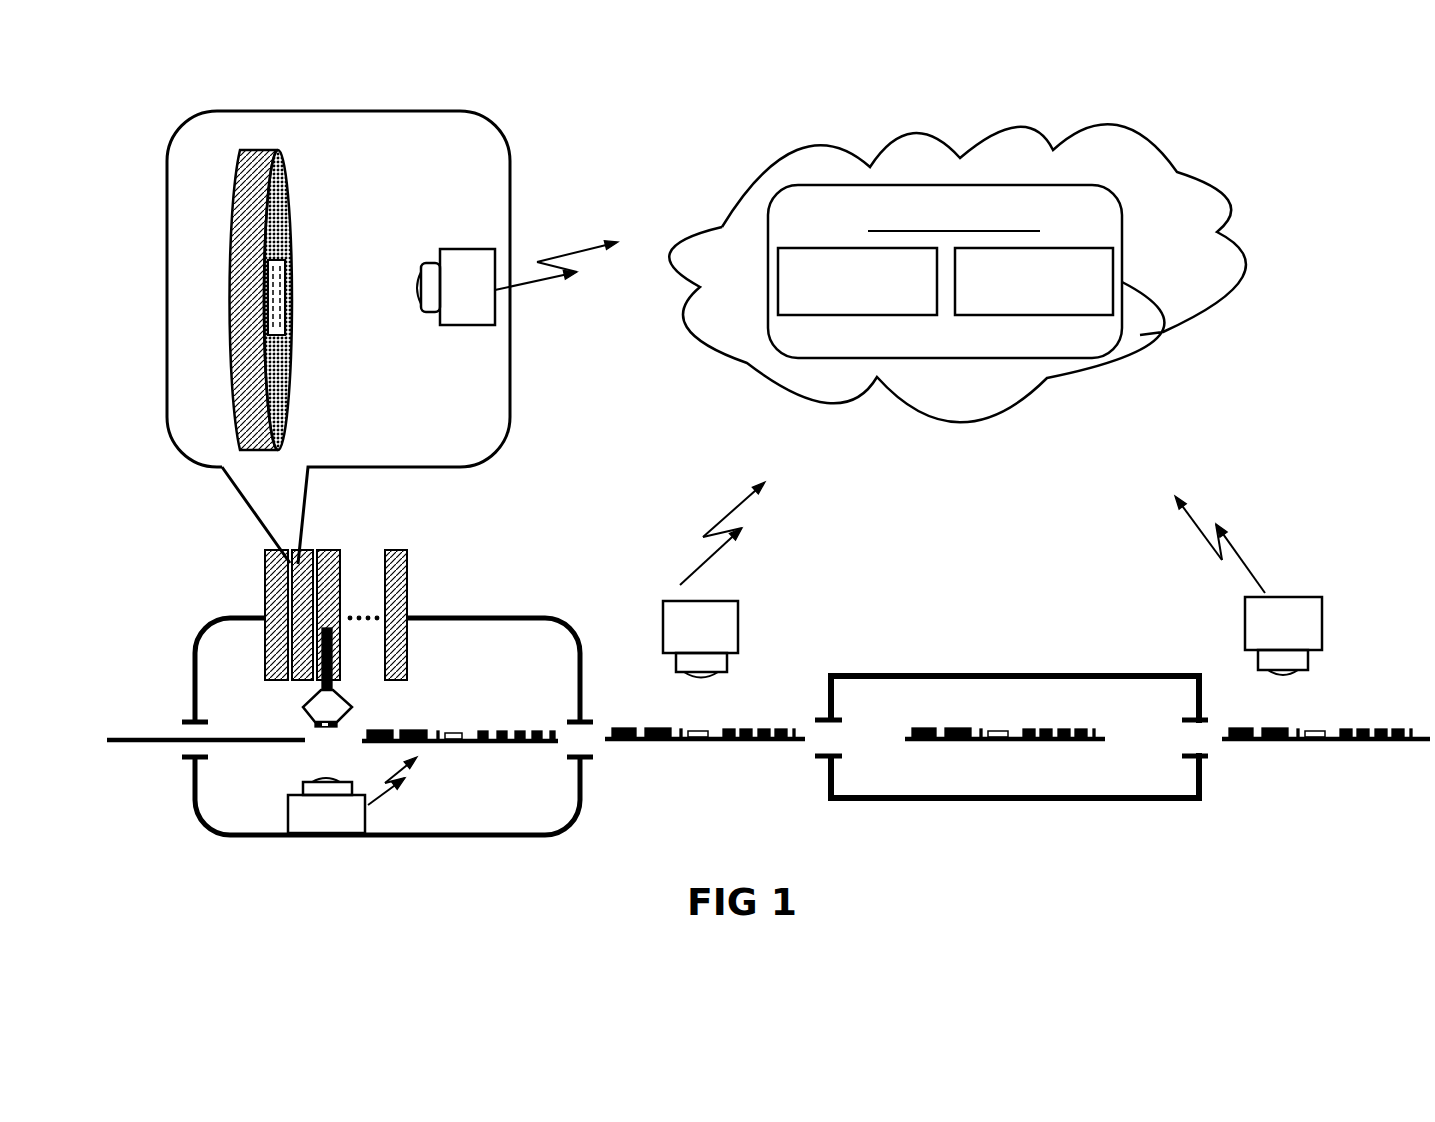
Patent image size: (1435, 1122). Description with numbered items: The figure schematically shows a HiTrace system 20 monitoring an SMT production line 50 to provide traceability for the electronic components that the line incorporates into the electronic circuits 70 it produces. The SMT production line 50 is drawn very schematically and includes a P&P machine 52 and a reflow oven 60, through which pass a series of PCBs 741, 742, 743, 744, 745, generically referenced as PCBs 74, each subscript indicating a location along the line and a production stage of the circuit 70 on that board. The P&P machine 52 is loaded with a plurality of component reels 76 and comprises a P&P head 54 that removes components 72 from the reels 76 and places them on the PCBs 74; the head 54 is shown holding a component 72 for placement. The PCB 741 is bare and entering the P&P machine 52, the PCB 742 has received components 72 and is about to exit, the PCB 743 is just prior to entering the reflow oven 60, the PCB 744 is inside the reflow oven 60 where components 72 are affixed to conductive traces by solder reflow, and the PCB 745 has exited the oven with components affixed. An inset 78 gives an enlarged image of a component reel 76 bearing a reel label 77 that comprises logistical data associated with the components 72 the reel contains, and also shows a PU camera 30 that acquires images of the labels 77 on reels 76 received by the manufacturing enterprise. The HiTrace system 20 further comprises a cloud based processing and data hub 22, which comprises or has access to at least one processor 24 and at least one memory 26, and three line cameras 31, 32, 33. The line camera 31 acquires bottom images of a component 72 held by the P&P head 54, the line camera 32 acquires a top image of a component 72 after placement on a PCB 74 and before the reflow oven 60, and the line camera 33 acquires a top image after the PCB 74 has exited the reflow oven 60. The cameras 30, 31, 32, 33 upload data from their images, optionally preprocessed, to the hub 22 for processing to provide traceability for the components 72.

The HiTrace system 20 is at (1365, 611).
The cloud based processing and data hub 22 is at (833, 227).
The processor 24 is at (850, 305).
The memory 26 is at (1050, 303).
The PU camera 30 is at (480, 297).
The line camera 31 is at (340, 826).
The line camera 32 is at (714, 638).
The line camera 33 is at (1300, 635).
The SMT production line 50 is at (1114, 831).
The P&P machine 52 is at (532, 665).
The P&P head 54 is at (322, 660).
The reflow oven 60 is at (890, 708).
The electronic circuit 70 is at (788, 697).
The component 72 is at (335, 725).
The PCB 74 is at (768, 762).
The PCB 741 is at (273, 741).
The PCB 742 is at (517, 742).
The PCB 743 is at (690, 743).
The PCB 744 is at (977, 742).
The PCB 745 is at (1410, 740).
The component reel 76 is at (314, 210).
The reel label 77 is at (283, 326).
The inset 78 is at (510, 190).